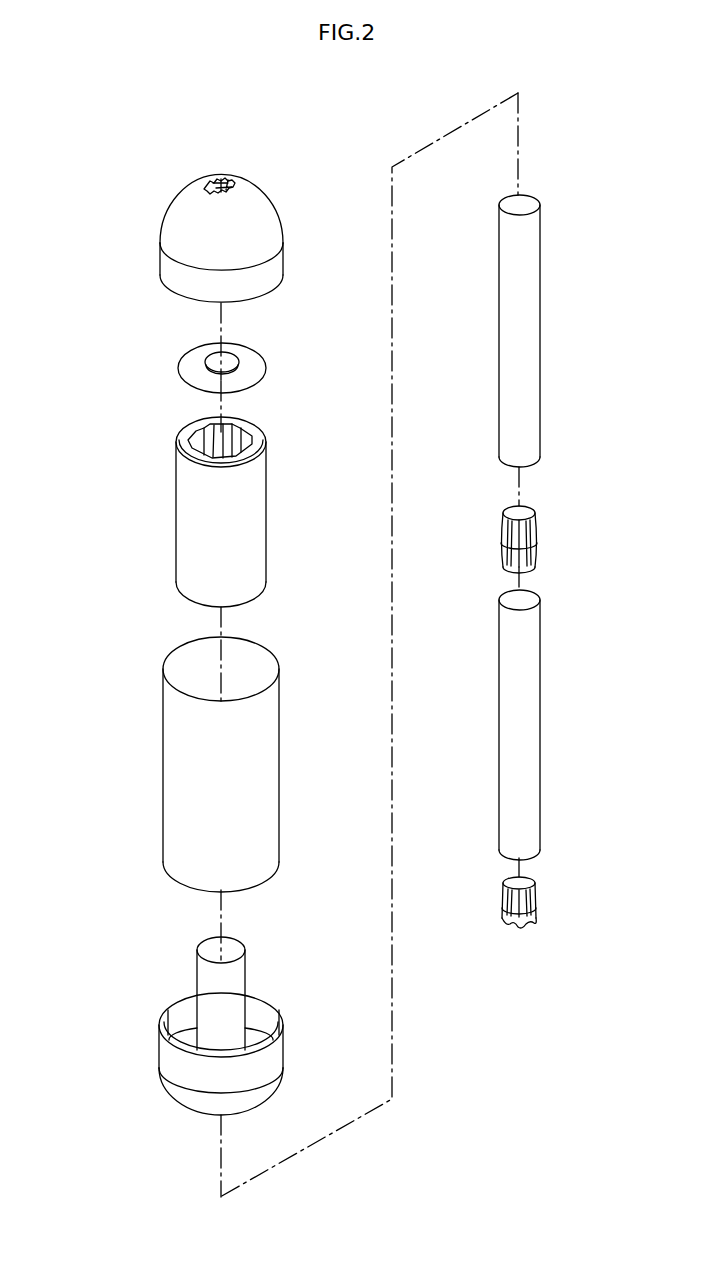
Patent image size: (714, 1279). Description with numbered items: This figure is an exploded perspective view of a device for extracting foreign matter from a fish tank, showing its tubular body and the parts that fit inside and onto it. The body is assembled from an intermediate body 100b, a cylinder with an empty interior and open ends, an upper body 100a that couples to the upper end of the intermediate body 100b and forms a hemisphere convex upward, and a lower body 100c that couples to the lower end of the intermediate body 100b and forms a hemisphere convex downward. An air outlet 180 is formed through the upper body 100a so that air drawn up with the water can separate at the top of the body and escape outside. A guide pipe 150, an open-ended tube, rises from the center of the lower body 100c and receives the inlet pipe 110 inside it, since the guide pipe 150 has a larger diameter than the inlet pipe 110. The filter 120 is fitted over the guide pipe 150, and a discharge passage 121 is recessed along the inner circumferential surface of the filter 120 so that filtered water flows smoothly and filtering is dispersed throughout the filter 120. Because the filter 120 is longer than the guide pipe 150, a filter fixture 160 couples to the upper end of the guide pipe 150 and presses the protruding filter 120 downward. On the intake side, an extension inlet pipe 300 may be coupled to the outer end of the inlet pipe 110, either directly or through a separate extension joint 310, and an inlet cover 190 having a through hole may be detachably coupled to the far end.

The upper body 100a is at (173, 219).
The intermediate body 100b is at (177, 765).
The lower body 100c is at (175, 1057).
The inlet pipe 110 is at (528, 310).
The filter 120 is at (182, 510).
The discharge passage 121 is at (188, 433).
The guide pipe 150 is at (240, 967).
The filter fixture 160 is at (258, 367).
The air outlet 180 is at (205, 175).
The inlet cover 190 is at (538, 897).
The extension inlet pipe 300 is at (530, 708).
The extension joint 310 is at (538, 540).